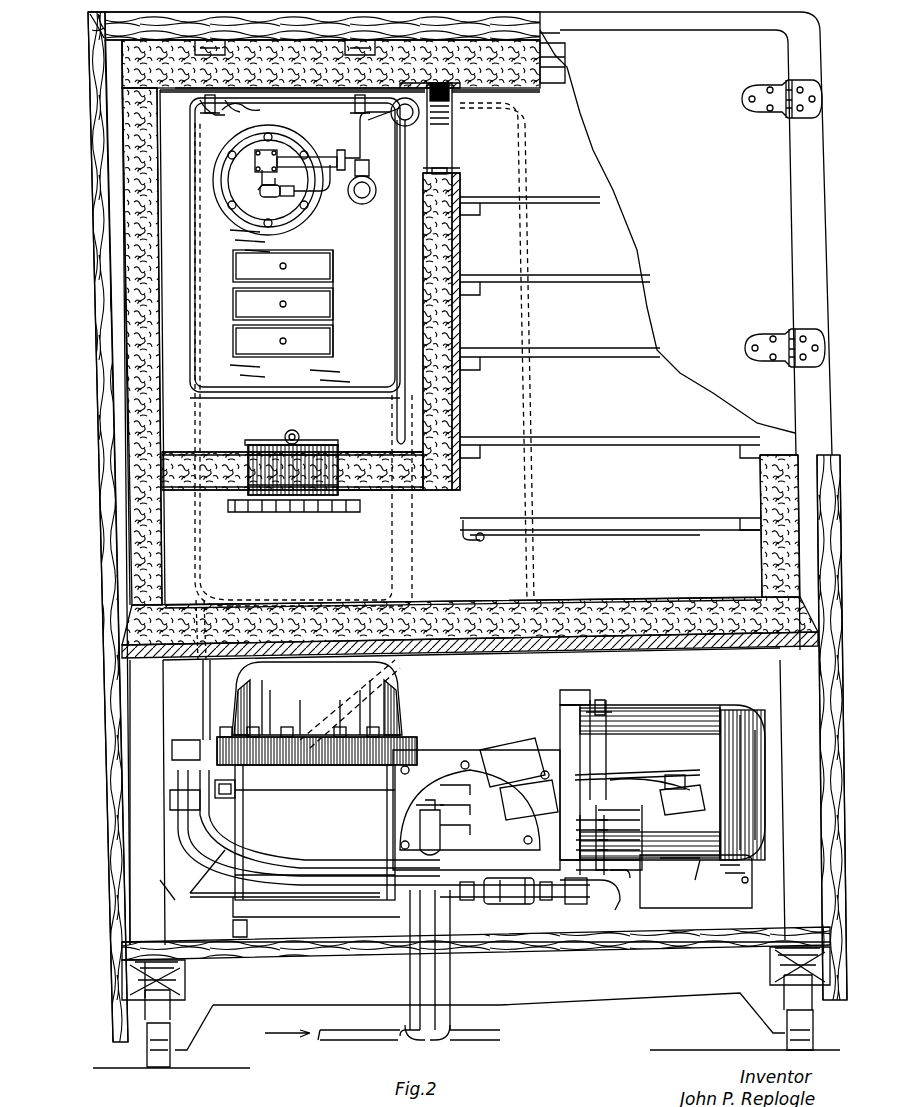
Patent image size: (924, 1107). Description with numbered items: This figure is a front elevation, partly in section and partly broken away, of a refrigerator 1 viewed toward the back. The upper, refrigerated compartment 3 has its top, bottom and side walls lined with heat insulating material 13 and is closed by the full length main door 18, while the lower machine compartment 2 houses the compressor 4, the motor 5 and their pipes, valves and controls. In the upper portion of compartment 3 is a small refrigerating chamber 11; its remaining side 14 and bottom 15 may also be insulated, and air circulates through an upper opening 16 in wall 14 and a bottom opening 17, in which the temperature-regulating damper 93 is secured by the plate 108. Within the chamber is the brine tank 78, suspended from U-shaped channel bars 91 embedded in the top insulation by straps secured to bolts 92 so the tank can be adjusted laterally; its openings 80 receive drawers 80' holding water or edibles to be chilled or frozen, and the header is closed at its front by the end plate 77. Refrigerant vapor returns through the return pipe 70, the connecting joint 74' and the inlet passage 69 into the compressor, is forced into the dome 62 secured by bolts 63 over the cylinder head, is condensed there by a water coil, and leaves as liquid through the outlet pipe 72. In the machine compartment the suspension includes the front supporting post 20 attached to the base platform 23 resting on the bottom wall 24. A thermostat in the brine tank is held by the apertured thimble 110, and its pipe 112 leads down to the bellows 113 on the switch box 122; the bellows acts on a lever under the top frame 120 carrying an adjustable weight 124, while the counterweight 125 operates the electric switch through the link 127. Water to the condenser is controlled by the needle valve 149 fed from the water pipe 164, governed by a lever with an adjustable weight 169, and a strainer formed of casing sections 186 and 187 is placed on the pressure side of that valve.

The refrigerator 1 is at (818, 192).
The machine compartment 2 is at (471, 666).
The refrigerated compartment 3 is at (610, 369).
The compressor 4 is at (405, 745).
The motor 5 is at (710, 720).
The refrigerating chamber 11 is at (295, 411).
The heat insulating material 13 is at (150, 155).
The side wall of refrigerating chamber 14 is at (460, 253).
The bottom of refrigerating chamber 15 is at (385, 490).
The upper air opening 16 is at (452, 140).
The bottom air opening 17 is at (340, 452).
The main door 18 is at (686, 233).
The front supporting post 20 is at (352, 910).
The base or supporting platform 23 is at (565, 930).
The bottom wall of lower compartment 24 is at (690, 945).
The dome 62 is at (380, 688).
The bolts 63 is at (340, 727).
The inlet passage 69 is at (316, 436).
The return pipe 70 is at (328, 160).
The outlet pipe 72 is at (240, 578).
The connecting joint 74' is at (300, 780).
The end plate 77 is at (258, 145).
The brine tank 78 is at (215, 272).
The openings 80 is at (268, 303).
The drawers 80' is at (350, 303).
The U-shaped channel bars 91 is at (190, 78).
The bolts 92 is at (245, 108).
The damper 93 is at (248, 500).
The plate 108 is at (368, 500).
The apertured thimble 110 is at (350, 200).
The pipe 112 is at (388, 130).
The bellows 113 is at (620, 860).
The top frame 120 is at (640, 772).
The switch box 122 is at (696, 881).
The weight 124 is at (512, 762).
The counterweight 125 is at (661, 804).
The link 127 is at (680, 855).
The needle valve 149 is at (575, 845).
The water pipe 164 is at (576, 908).
The adjustable weight 169 is at (529, 800).
The strainer casing section 186 is at (500, 895).
The strainer casing section 187 is at (310, 905).